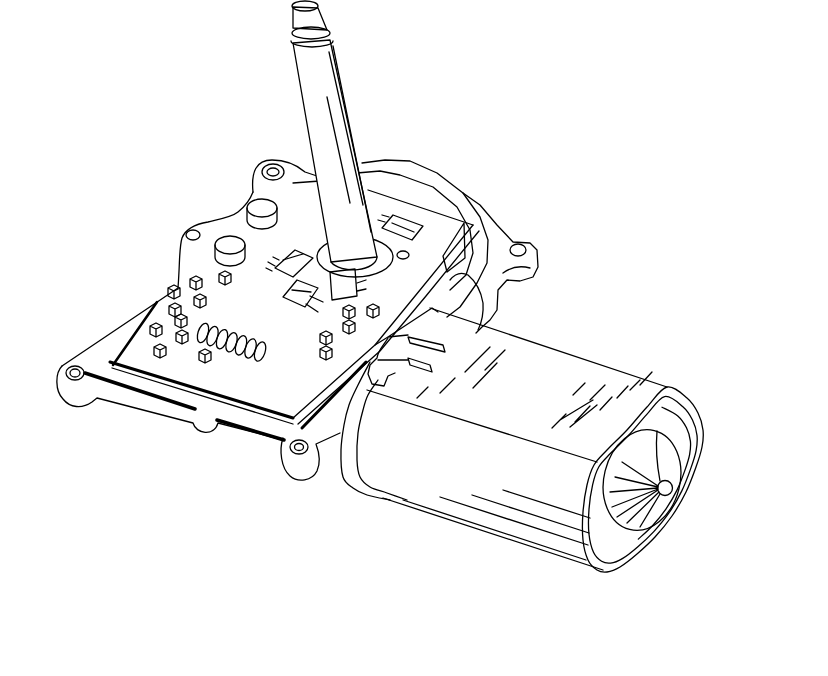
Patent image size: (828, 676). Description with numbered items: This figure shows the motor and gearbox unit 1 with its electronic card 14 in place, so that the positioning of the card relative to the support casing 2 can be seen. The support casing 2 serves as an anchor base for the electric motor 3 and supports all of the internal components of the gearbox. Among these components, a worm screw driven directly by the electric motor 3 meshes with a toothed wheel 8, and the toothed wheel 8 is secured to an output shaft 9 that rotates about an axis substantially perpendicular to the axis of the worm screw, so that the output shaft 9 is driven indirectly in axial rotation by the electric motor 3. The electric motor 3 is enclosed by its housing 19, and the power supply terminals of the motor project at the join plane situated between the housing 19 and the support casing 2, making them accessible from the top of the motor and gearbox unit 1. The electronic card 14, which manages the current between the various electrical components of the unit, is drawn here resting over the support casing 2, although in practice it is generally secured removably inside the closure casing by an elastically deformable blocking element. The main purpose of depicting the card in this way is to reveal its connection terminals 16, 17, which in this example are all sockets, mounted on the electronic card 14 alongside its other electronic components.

The motor and gearbox unit 1 is at (178, 138).
The support casing 2 is at (107, 355).
The electric motor 3 is at (603, 378).
The toothed wheel 8 is at (500, 297).
The output shaft 9 is at (320, 73).
The electronic card 14 is at (441, 235).
The connection terminal 16 is at (317, 343).
The connection terminal 17 is at (178, 281).
The housing 19 is at (423, 473).